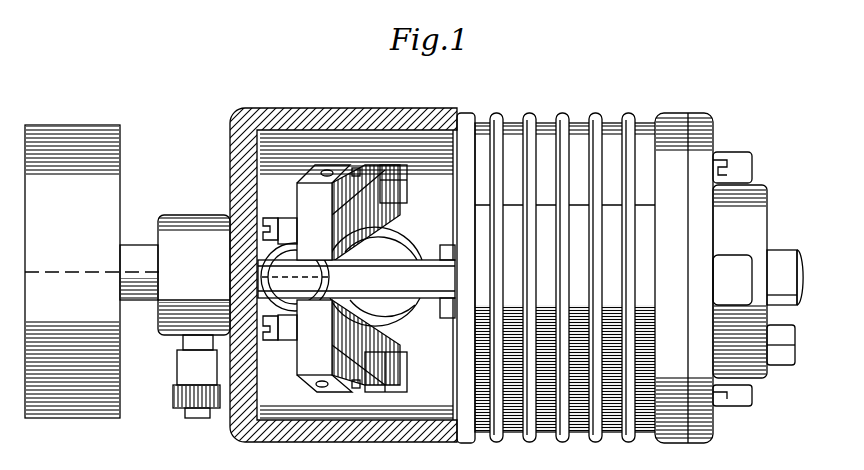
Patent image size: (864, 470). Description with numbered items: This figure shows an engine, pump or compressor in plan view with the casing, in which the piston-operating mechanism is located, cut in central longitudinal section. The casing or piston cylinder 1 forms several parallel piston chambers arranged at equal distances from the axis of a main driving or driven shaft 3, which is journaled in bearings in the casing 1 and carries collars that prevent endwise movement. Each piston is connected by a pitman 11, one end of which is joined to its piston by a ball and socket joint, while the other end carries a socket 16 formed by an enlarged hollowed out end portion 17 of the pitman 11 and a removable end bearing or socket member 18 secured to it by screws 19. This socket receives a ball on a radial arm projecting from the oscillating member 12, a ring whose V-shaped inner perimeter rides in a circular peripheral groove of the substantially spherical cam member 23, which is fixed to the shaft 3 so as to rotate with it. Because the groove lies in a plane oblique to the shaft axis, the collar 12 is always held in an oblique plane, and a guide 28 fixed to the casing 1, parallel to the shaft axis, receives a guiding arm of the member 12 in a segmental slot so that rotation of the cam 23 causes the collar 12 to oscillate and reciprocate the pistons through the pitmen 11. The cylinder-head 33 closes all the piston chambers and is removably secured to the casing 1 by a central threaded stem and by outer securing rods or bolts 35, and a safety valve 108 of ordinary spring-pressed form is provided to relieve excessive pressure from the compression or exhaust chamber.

The casing or piston cylinder 1 is at (548, 135).
The main driving or driven shaft 3 is at (22, 258).
The pitman 11 is at (440, 380).
The oscillating member 12 is at (324, 278).
The socket 16 is at (262, 272).
The enlarged hollowed out end portion 17 is at (420, 180).
The removable end bearing or socket member 18 is at (392, 165).
The screws 19 is at (272, 222).
The cam member 23 is at (400, 258).
The guide 28 is at (443, 277).
The cylinder-head 33 is at (712, 130).
The securing rods or bolts 35 is at (728, 165).
The safety valve 108 is at (797, 352).